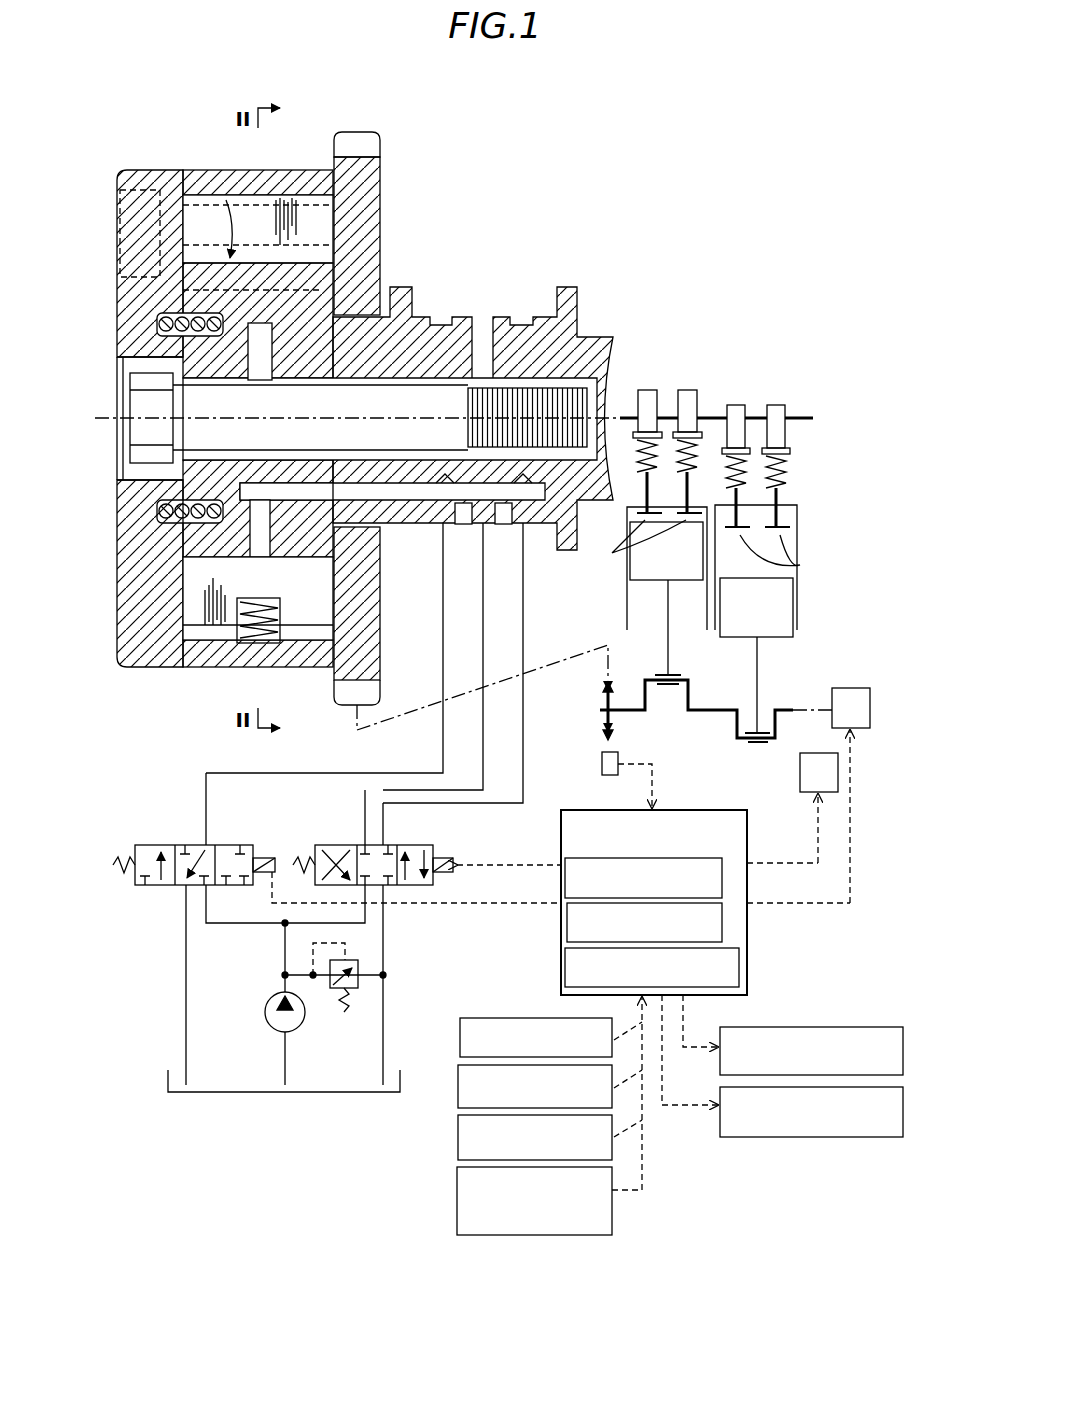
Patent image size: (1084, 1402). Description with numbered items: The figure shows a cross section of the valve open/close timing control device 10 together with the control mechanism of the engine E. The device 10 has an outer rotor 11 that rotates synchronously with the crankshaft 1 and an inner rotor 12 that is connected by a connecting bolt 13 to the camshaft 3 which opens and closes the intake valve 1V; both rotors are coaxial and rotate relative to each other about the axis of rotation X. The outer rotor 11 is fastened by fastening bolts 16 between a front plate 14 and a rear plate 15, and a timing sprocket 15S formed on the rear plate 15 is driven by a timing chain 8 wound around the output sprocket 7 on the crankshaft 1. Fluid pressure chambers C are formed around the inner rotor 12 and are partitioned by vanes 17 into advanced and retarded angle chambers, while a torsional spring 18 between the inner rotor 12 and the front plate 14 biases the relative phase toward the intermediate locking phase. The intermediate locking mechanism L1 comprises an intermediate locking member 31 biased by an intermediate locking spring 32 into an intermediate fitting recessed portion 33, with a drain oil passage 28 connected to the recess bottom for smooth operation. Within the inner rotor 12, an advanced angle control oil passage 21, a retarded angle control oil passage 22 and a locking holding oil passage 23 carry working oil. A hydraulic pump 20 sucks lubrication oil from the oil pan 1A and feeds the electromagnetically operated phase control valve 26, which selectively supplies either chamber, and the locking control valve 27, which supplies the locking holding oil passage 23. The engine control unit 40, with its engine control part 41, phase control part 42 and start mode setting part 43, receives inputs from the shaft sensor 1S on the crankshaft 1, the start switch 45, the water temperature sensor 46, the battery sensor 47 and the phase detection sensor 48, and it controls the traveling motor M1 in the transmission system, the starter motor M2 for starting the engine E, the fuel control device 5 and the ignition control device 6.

The valve open/close timing control device 10 is at (150, 158).
The outer rotor 11 is at (215, 170).
The fastening bolt 16 is at (231, 178).
The vane 17 is at (288, 198).
The timing sprocket 15S is at (382, 138).
The rear plate 15 is at (380, 186).
The fluid pressure chamber C is at (215, 232).
The torsional spring 18 is at (160, 326).
The camshaft 3 is at (600, 336).
The connecting bolt 13 is at (130, 448).
The axis of rotation X is at (442, 418).
The advanced angle control oil passage 21 is at (256, 375).
The locking holding oil passage 23 is at (280, 470).
The retarded angle control oil passage 22 is at (523, 580).
The drain oil passage 28 is at (268, 545).
The inner rotor 12 is at (193, 542).
The intermediate fitting recessed portion 33 is at (215, 575).
The front plate 14 is at (127, 642).
The intermediate locking mechanism L1 is at (207, 640).
The intermediate locking member 31 is at (228, 640).
The intermediate locking spring 32 is at (280, 640).
The timing chain 8 is at (452, 706).
The engine E is at (752, 245).
The intake valve 1V is at (709, 485).
The crankshaft 1 is at (710, 740).
The output sprocket 7 is at (605, 705).
The traveling motor M1 is at (851, 795).
The starter motor M2 is at (819, 808).
The shaft sensor 1S is at (600, 764).
The engine control unit 40 is at (561, 830).
The engine control part 41 is at (722, 878).
The phase control part 42 is at (722, 923).
The start mode setting part 43 is at (739, 968).
The locking control valve 27 is at (152, 845).
The phase control valve 26 is at (332, 845).
The hydraulic pump 20 is at (266, 1005).
The oil pan 1A is at (168, 1085).
The start switch 45 is at (460, 1037).
The water temperature sensor 46 is at (458, 1068).
The battery sensor 47 is at (458, 1138).
The phase detection sensor 48 is at (457, 1200).
The fuel control device 5 is at (823, 1027).
The ignition control device 6 is at (810, 1137).